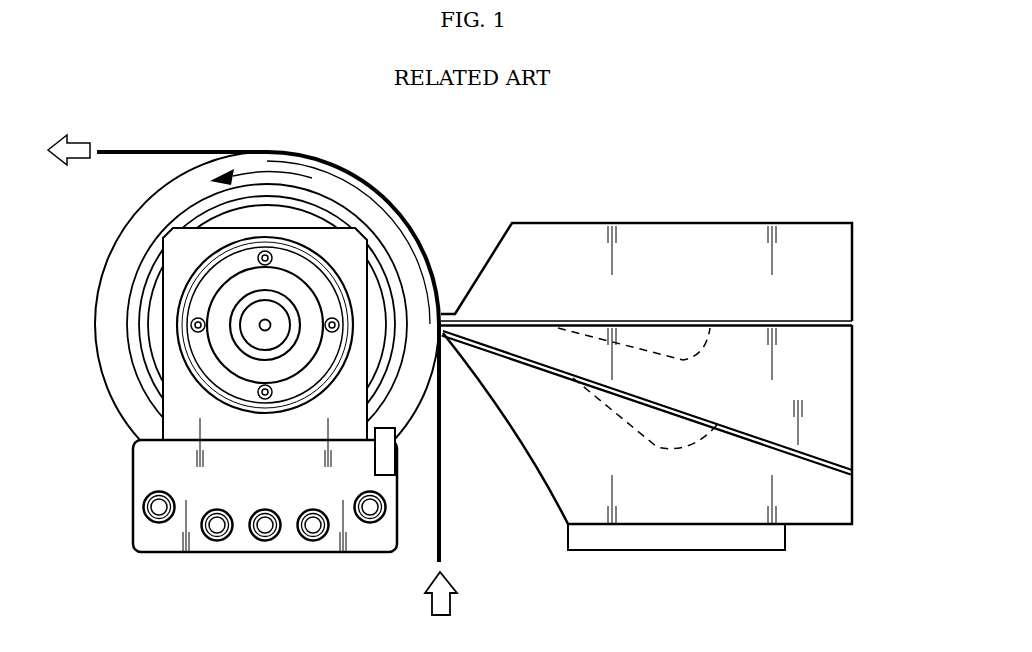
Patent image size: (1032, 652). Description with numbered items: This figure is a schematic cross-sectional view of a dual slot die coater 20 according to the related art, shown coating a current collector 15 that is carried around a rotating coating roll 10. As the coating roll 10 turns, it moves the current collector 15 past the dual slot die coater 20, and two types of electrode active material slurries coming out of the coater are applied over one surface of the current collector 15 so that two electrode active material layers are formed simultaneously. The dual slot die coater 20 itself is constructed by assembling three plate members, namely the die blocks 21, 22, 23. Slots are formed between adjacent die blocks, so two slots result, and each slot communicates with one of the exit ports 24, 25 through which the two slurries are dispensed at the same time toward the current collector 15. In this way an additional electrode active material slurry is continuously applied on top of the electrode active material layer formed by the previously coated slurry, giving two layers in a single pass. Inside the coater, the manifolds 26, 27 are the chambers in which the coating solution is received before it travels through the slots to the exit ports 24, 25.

The coating roll 10 is at (95, 323).
The current collector 15 is at (441, 510).
The dual slot die coater 20 is at (670, 376).
The die block 21 is at (852, 498).
The die block 22 is at (852, 390).
The die block 23 is at (852, 272).
The exit port 24 is at (477, 335).
The exit port 25 is at (480, 322).
The manifold 26 is at (668, 450).
The manifold 27 is at (687, 357).